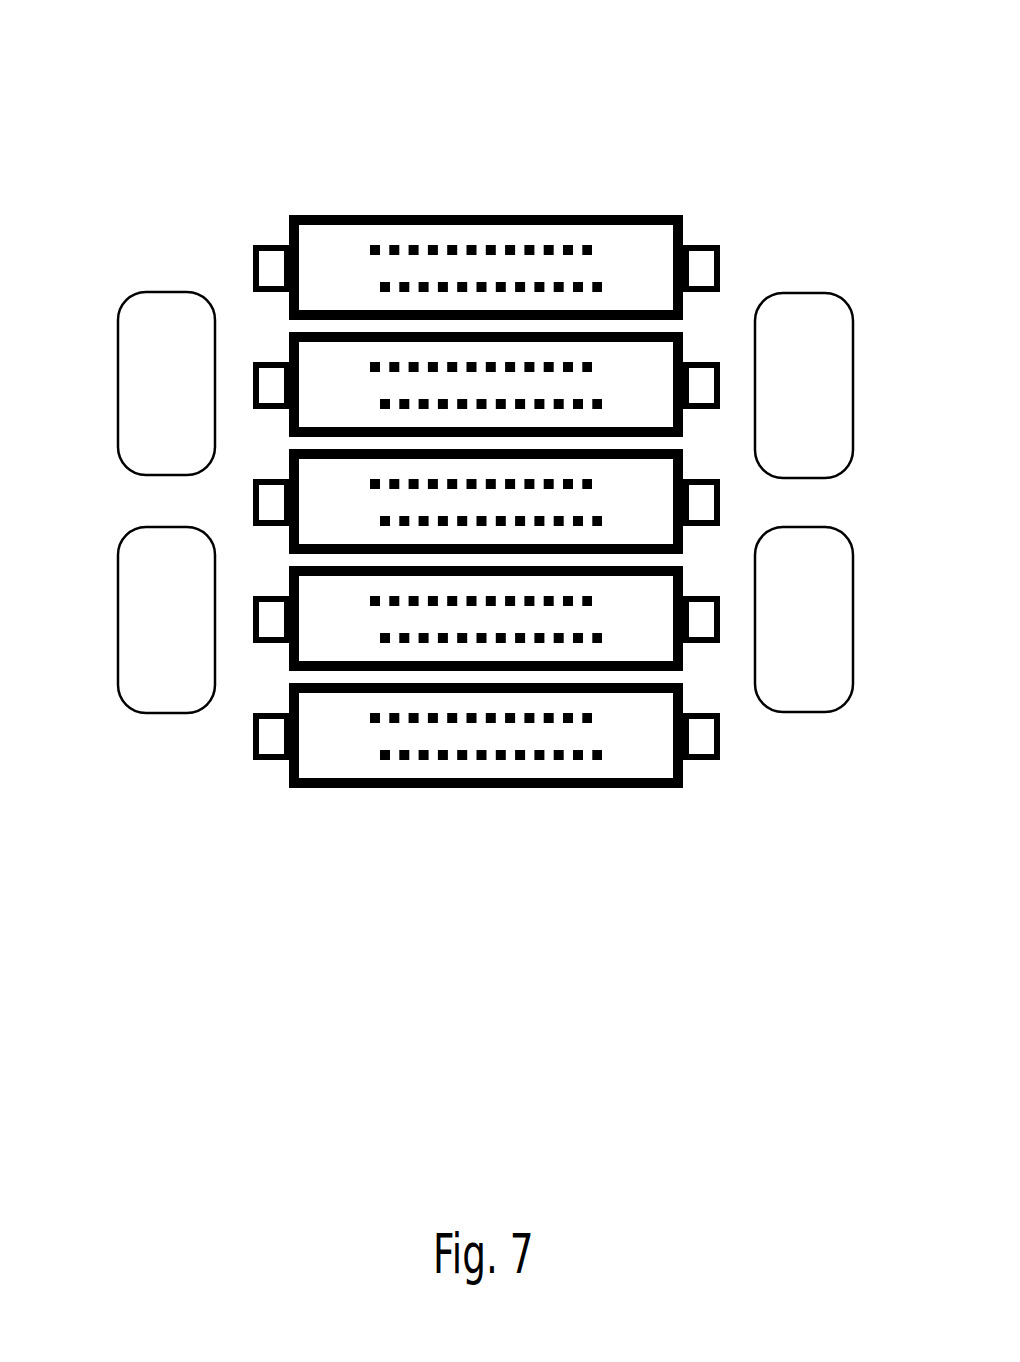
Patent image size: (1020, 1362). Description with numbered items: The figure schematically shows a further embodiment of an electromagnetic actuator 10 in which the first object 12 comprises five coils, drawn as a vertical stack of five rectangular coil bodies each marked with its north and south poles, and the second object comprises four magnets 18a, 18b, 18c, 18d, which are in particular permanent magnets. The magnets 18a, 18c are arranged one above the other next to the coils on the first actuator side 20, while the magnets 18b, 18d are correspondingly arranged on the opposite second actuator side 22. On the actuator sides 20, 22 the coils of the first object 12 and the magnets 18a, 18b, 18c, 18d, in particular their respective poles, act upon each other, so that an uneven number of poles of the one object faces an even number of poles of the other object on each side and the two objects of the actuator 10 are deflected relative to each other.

The electromagnetic actuator 10 is at (188, 100).
The first object 12 is at (634, 170).
The magnet 18a is at (137, 452).
The magnet 18b is at (826, 310).
The magnet 18c is at (137, 688).
The magnet 18d is at (826, 543).
The first actuator side 20 is at (239, 780).
The second actuator side 22 is at (728, 780).